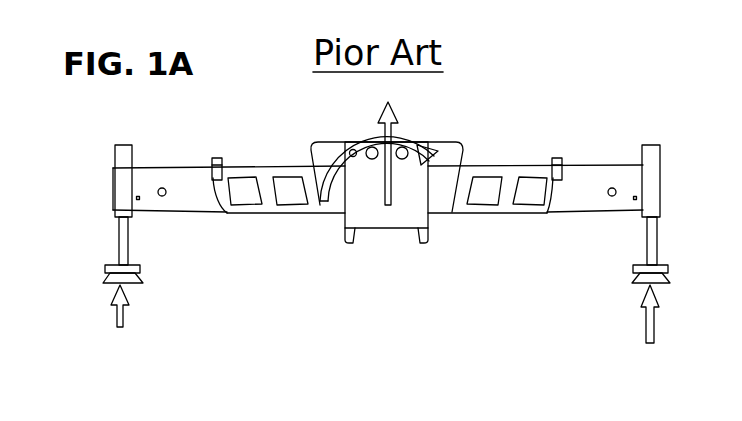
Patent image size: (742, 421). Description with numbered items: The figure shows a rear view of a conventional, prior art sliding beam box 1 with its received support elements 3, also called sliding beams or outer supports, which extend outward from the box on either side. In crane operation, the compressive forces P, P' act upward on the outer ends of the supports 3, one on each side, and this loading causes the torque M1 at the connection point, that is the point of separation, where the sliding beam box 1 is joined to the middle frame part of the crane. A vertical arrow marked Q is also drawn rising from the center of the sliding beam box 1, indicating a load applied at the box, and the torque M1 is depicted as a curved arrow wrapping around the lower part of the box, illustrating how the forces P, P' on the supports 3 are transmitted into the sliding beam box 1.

The sliding beam box 1 is at (352, 167).
The support elements 3 is at (597, 185).
The torque M1 is at (426, 251).
The vertical load Q is at (395, 131).
The compressive force P is at (623, 314).
The compressive force P' is at (139, 322).